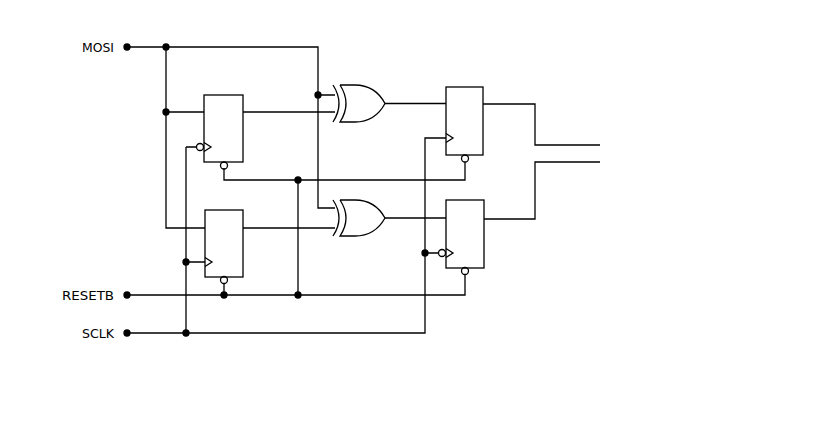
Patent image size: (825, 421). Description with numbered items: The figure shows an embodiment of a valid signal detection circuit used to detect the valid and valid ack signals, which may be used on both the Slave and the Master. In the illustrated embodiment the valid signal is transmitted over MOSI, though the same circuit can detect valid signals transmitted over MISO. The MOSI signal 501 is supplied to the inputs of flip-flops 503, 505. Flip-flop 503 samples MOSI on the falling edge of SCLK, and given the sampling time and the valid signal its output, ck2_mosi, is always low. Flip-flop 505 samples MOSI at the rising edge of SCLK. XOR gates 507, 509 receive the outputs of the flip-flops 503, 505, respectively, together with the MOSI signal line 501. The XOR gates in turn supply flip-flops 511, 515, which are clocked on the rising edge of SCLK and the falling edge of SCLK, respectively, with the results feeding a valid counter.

The MOSI signal 501 is at (176, 47).
The flip-flop 503 is at (218, 95).
The flip-flop 505 is at (243, 248).
The XOR gate 507 is at (357, 87).
The XOR gate 509 is at (354, 202).
The flip-flop 511 is at (461, 87).
The flip-flop 515 is at (531, 259).